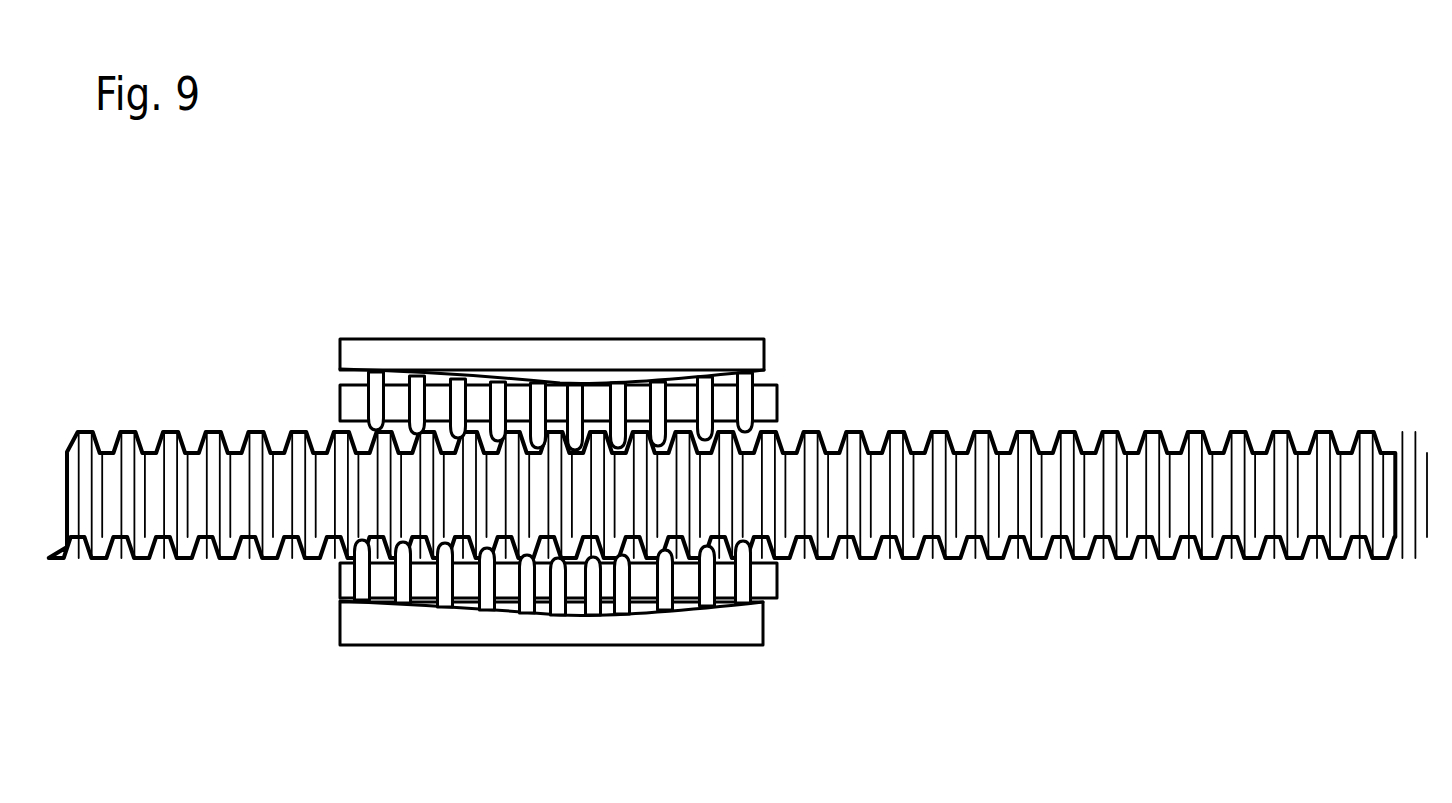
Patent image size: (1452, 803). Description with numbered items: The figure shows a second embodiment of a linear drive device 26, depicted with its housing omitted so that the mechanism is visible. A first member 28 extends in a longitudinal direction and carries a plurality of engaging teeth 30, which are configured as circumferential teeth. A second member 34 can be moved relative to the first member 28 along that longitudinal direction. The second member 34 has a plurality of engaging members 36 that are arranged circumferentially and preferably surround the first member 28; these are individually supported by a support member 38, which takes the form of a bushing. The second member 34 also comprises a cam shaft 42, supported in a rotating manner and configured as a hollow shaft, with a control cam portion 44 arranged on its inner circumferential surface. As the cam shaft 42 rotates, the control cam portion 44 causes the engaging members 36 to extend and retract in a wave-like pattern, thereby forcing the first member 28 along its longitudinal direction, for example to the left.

The linear drive device 26 is at (392, 127).
The first member 28 is at (1115, 604).
The engaging teeth 30 is at (1110, 434).
The second member 34 is at (352, 280).
The engaging members 36 is at (577, 405).
The support member 38 is at (350, 405).
The cam shaft 42 is at (678, 306).
The control cam portion 44 is at (515, 358).